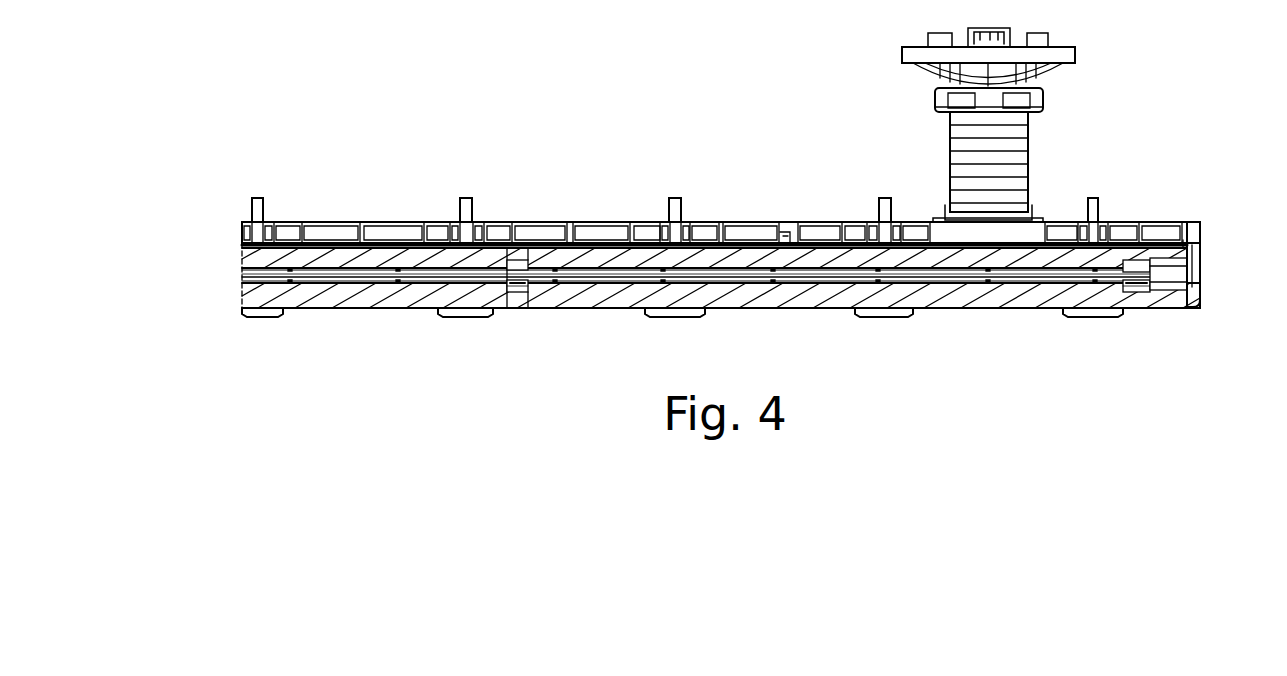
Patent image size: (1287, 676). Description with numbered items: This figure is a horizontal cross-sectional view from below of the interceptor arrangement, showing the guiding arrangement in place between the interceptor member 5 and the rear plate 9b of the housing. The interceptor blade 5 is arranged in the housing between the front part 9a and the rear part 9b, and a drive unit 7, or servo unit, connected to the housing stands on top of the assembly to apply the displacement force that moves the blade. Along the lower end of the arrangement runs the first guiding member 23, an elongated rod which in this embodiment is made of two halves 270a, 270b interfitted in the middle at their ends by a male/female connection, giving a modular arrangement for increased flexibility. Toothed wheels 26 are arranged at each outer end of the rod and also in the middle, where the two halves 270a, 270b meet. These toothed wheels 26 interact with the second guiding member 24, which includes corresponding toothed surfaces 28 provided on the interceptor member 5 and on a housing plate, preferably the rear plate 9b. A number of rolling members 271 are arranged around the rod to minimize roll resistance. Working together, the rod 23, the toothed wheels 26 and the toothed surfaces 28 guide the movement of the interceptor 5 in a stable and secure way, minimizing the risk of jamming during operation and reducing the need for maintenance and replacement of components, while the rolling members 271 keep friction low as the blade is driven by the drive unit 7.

The interceptor blade 5 is at (1182, 258).
The drive unit 7 is at (1041, 156).
The front part 9a is at (1163, 230).
The rear part 9b is at (1183, 298).
The first guiding member 23 is at (242, 275).
The second guiding member 24 is at (524, 258).
The toothed wheels 26 is at (525, 280).
The toothed surfaces 28 is at (505, 260).
The first rod half 270a is at (397, 270).
The second rod half 270b is at (663, 277).
The rolling members 271 is at (350, 287).